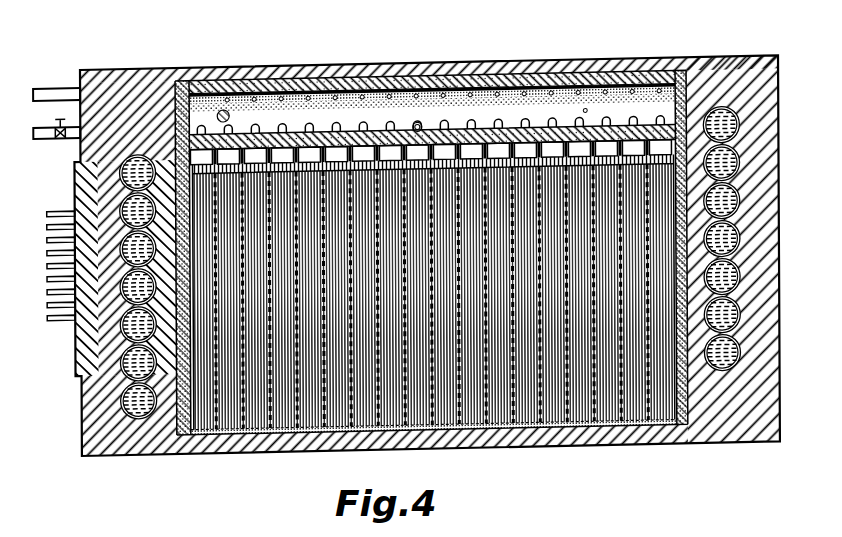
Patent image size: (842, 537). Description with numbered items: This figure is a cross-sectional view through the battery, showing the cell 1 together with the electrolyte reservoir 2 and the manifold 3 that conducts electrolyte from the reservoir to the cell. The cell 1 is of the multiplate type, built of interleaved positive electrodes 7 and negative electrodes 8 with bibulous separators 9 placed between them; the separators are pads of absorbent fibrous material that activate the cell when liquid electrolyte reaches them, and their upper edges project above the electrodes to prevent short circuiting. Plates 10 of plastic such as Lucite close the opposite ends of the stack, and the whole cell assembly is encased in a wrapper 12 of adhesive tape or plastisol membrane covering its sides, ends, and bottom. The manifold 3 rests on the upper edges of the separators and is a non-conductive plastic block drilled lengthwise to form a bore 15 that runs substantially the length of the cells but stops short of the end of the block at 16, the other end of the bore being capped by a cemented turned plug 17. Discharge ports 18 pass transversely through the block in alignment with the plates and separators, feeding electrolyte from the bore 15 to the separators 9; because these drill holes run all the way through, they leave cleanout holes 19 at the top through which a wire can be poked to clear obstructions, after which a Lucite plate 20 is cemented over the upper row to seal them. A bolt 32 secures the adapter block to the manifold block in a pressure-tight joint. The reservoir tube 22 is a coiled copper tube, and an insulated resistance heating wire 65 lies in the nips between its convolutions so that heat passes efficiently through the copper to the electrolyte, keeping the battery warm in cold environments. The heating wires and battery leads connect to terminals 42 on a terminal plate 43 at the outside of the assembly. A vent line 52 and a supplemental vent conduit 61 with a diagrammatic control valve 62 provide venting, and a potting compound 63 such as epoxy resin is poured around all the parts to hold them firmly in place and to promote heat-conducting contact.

The cell 1 is at (548, 458).
The electrolyte reservoir 2 is at (731, 121).
The manifold 3 is at (504, 112).
The positive electrodes 7 is at (210, 441).
The negative electrodes 8 is at (231, 450).
The bibulous separators 9 is at (353, 158).
The plates 10 is at (200, 455).
The wrapper 12 is at (148, 457).
The bore 15 is at (627, 72).
The end of bore 16 is at (186, 85).
The turned plug 17 is at (704, 82).
The discharge ports 18 is at (288, 125).
The cleanout holes 19 is at (490, 86).
The plate 20 is at (408, 70).
The reservoir tube 22 is at (768, 193).
The bolt 32 is at (243, 84).
The terminals 42 is at (56, 320).
The terminal plate 43 is at (74, 190).
The vent line 52 is at (57, 88).
The vent conduit 61 is at (44, 139).
The control valve 62 is at (57, 126).
The potting compound 63 is at (104, 438).
The resistance heating wire 65 is at (85, 396).